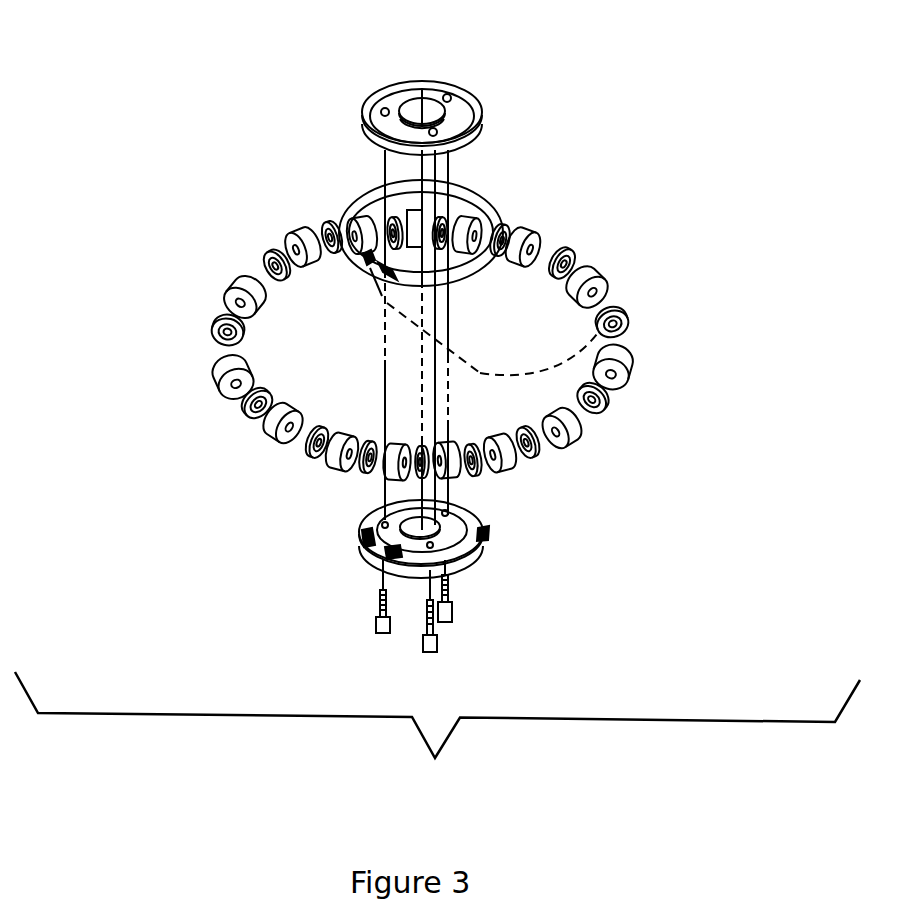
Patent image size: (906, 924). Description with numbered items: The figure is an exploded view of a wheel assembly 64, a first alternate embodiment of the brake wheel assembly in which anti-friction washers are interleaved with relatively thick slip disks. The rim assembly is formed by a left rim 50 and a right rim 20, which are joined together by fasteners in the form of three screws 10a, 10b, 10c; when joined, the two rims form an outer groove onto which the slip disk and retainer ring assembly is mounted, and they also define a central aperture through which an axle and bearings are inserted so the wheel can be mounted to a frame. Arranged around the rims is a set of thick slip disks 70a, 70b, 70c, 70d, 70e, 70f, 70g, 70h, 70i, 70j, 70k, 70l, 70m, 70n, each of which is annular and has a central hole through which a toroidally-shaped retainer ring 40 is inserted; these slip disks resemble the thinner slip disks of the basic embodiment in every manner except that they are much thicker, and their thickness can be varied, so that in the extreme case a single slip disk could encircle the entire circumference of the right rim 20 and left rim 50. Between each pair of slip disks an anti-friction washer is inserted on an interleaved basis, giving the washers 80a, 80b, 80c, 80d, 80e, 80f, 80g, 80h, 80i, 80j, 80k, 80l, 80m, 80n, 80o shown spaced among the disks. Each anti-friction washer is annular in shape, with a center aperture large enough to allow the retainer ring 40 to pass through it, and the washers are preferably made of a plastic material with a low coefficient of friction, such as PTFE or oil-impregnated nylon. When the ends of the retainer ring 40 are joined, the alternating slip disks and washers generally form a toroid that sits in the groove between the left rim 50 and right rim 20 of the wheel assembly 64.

The screw 10a is at (372, 642).
The screw 10b is at (443, 660).
The screw 10c is at (457, 630).
The right rim 20 is at (487, 540).
The retainer ring 40 is at (573, 245).
The left rim 50 is at (480, 90).
The wheel assembly 64 is at (437, 735).
The slip disk 70a is at (632, 372).
The slip disk 70b is at (617, 270).
The slip disk 70c is at (530, 218).
The slip disk 70d is at (455, 218).
The slip disk 70e is at (378, 182).
The slip disk 70f is at (293, 217).
The slip disk 70g is at (230, 278).
The slip disk 70h is at (220, 362).
The slip disk 70i is at (290, 422).
The slip disk 70j is at (335, 468).
The slip disk 70k is at (372, 480).
The slip disk 70l is at (455, 480).
The slip disk 70m is at (510, 475).
The slip disk 70n is at (578, 445).
The anti-friction washer 80a is at (628, 313).
The anti-friction washer 80b is at (572, 247).
The anti-friction washer 80c is at (508, 213).
The anti-friction washer 80d is at (467, 187).
The anti-friction washer 80e is at (372, 195).
The anti-friction washer 80f is at (328, 220).
The anti-friction washer 80g is at (268, 243).
The anti-friction washer 80h is at (218, 313).
The anti-friction washer 80i is at (233, 407).
The anti-friction washer 80j is at (305, 460).
The anti-friction washer 80k is at (362, 472).
The anti-friction washer 80l is at (383, 490).
The anti-friction washer 80m is at (483, 477).
The anti-friction washer 80n is at (543, 465).
The anti-friction washer 80o is at (607, 408).